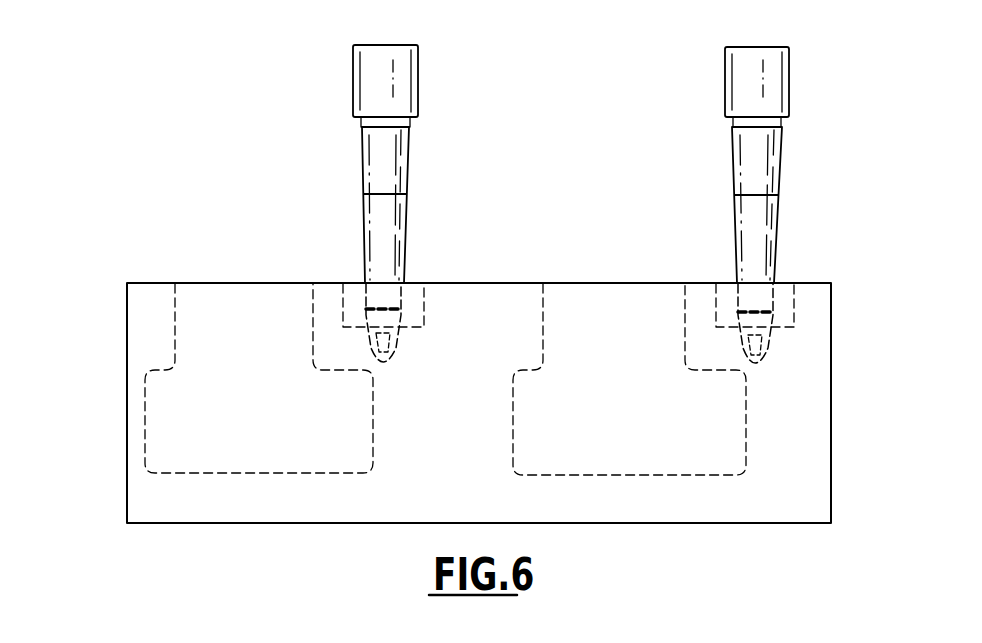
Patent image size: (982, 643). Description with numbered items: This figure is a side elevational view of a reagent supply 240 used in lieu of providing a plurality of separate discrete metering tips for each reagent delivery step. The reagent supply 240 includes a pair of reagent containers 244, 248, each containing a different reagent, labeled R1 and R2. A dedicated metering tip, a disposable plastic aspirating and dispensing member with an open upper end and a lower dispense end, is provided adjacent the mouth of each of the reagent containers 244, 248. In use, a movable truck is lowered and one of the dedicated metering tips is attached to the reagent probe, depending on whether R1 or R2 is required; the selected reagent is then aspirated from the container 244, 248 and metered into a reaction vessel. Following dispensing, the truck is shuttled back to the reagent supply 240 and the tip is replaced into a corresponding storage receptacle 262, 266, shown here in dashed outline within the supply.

The reagent supply 240 is at (122, 378).
The reagent container 244 is at (257, 453).
The reagent container 248 is at (653, 462).
The storage receptacle 262 is at (352, 292).
The storage receptacle 266 is at (727, 292).